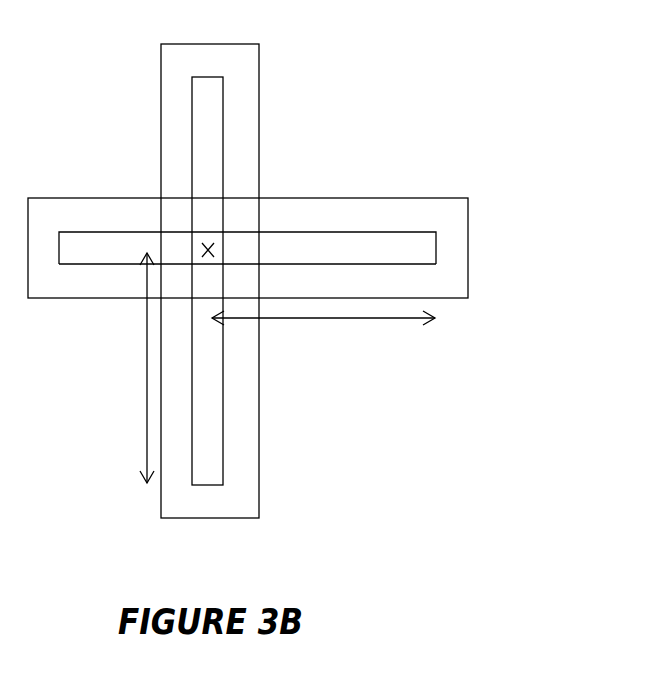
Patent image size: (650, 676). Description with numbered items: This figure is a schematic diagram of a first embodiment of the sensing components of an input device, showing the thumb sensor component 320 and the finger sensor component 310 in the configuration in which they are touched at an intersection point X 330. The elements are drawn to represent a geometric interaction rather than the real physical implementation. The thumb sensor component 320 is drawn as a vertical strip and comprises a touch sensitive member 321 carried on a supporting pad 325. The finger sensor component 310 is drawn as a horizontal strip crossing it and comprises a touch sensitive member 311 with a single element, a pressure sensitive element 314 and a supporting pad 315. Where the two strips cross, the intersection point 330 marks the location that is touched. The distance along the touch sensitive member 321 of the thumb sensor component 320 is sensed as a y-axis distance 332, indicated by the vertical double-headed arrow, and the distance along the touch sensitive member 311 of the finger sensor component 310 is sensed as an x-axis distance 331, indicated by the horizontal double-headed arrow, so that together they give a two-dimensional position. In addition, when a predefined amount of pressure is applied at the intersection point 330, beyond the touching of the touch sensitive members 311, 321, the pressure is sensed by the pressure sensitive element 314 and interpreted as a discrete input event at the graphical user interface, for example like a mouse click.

The finger sensor component 310 is at (433, 187).
The touch sensitive member 311 is at (432, 253).
The pressure sensitive element 314 is at (428, 263).
The supporting pad 315 is at (463, 218).
The thumb sensor component 320 is at (127, 45).
The touch sensitive member 321 is at (203, 163).
The supporting pad 325 is at (161, 115).
The intersection point 330 is at (222, 242).
The x-axis distance 331 is at (385, 320).
The y-axis distance 332 is at (147, 367).